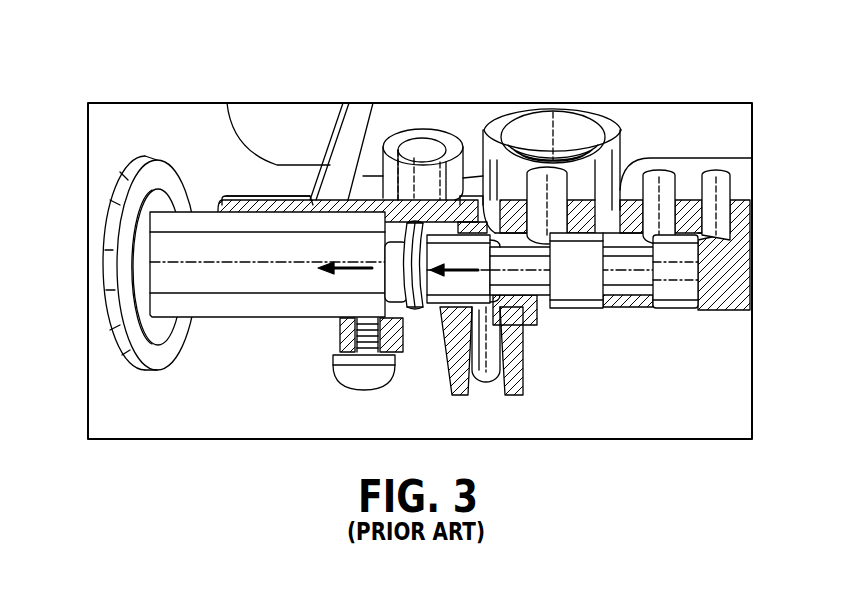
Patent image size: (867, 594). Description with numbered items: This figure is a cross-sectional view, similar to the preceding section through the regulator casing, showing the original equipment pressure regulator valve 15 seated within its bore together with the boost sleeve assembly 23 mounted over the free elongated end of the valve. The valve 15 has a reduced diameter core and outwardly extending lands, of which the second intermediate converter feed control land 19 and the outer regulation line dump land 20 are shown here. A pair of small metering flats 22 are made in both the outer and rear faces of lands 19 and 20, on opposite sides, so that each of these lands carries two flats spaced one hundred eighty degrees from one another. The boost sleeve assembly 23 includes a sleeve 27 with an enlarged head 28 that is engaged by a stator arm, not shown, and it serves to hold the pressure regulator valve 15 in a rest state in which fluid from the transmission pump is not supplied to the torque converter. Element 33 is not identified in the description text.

The pressure regulator valve 15 is at (650, 272).
The second intermediate converter feed control land 19 is at (578, 248).
The outer regulation line dump land 20 is at (440, 310).
The metering flats 22 is at (490, 265).
The boost sleeve assembly 23 is at (268, 333).
The sleeve 27 is at (198, 216).
The enlarged head 28 is at (130, 266).
The screw 33 is at (341, 387).